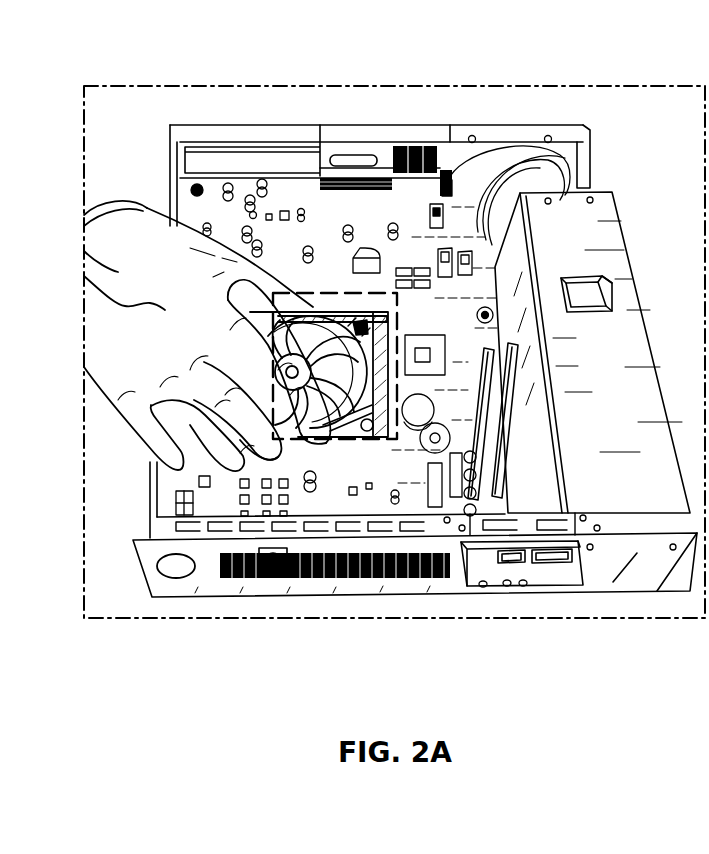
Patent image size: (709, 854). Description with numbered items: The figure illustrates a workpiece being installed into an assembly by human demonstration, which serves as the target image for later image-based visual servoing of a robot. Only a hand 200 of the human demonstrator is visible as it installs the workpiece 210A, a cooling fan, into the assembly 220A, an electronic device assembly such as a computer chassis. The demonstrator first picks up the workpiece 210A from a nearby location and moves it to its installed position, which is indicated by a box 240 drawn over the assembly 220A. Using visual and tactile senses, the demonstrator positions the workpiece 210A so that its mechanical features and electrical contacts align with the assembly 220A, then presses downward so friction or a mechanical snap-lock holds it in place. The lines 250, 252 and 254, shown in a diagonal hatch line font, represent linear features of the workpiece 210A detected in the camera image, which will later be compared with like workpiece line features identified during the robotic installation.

The hand 200 is at (86, 249).
The workpiece 210A is at (371, 372).
The assembly 220A is at (614, 594).
The box 240 is at (325, 292).
The line 250 is at (297, 310).
The line 252 is at (372, 345).
The line 254 is at (372, 345).